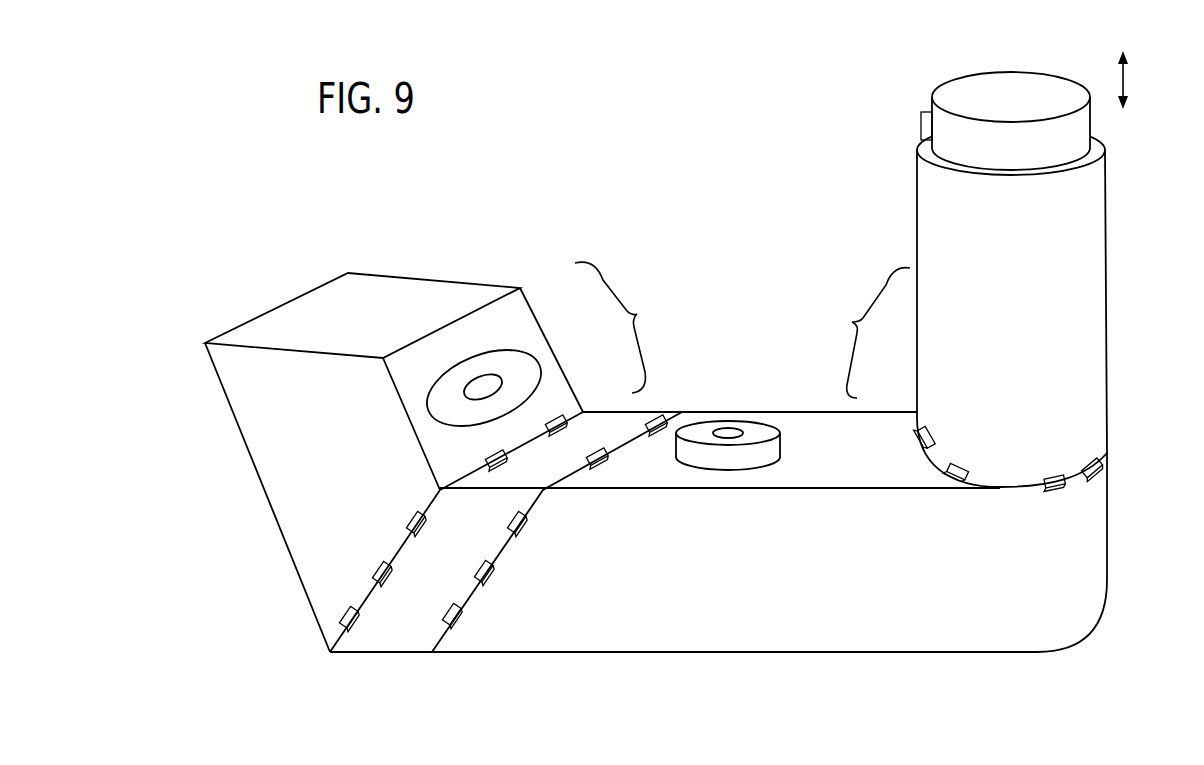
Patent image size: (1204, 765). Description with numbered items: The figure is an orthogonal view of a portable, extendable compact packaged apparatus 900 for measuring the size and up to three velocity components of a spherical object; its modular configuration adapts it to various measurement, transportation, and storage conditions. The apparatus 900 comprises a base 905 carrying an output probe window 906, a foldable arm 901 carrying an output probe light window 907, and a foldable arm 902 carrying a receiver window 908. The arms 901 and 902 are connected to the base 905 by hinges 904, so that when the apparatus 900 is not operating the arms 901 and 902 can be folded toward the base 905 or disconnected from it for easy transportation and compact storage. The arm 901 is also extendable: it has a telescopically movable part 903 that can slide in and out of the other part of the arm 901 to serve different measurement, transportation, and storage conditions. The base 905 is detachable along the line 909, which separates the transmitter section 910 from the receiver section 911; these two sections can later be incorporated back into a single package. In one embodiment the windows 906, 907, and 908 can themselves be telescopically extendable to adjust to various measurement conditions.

The compact packaged apparatus 900 is at (745, 108).
The foldable arm 901 is at (1072, 249).
The foldable arm 902 is at (476, 293).
The telescopically movable part 903 is at (1080, 127).
The hinges 904 is at (576, 411).
The base 905 is at (692, 637).
The output probe window 906 is at (763, 427).
The output probe light window 907 is at (919, 118).
The receiver window 908 is at (525, 357).
The line 909 is at (682, 411).
The transmitter section 910 is at (861, 333).
The receiver section 911 is at (623, 327).